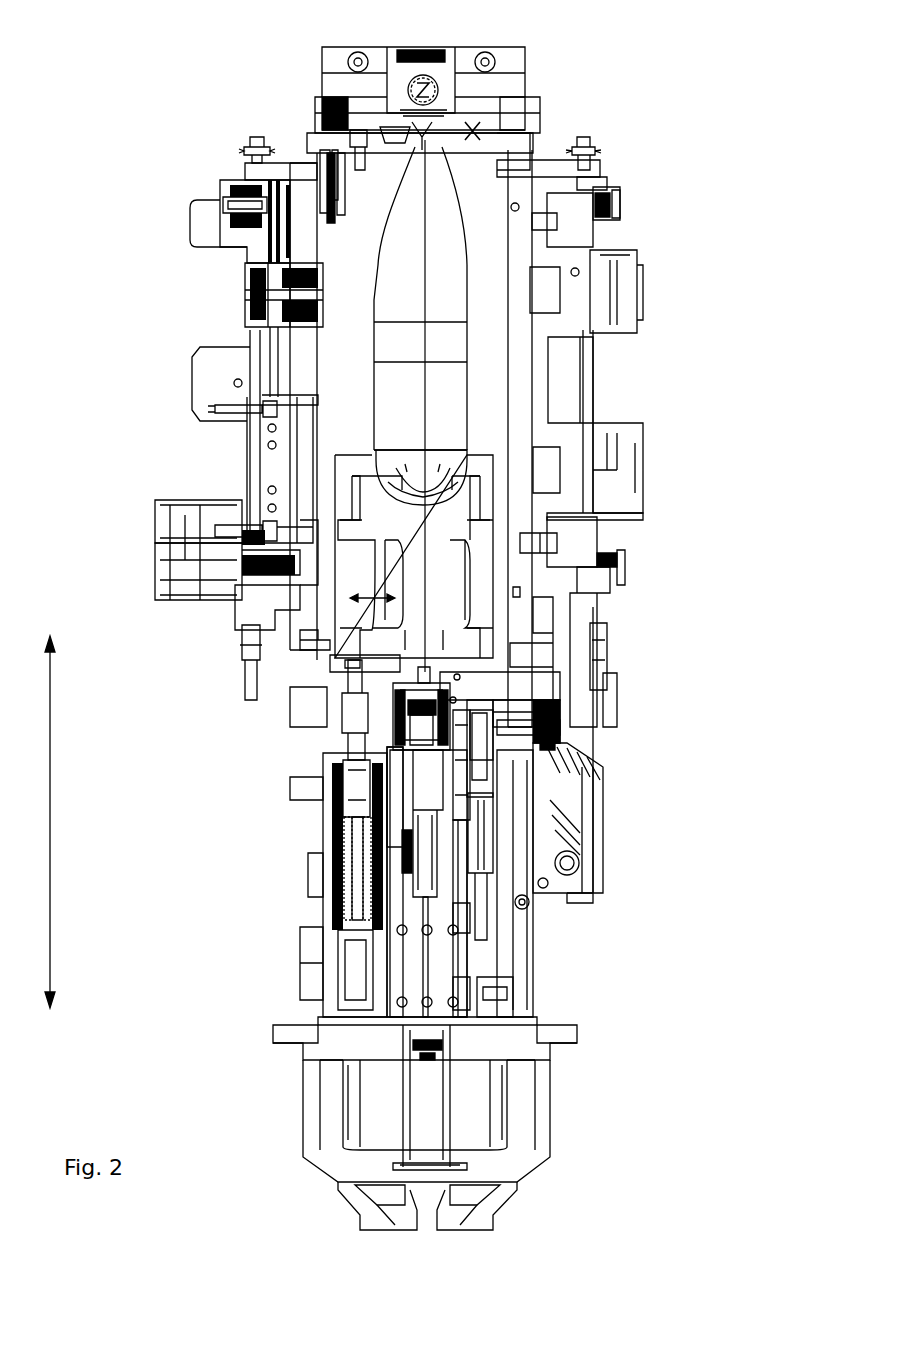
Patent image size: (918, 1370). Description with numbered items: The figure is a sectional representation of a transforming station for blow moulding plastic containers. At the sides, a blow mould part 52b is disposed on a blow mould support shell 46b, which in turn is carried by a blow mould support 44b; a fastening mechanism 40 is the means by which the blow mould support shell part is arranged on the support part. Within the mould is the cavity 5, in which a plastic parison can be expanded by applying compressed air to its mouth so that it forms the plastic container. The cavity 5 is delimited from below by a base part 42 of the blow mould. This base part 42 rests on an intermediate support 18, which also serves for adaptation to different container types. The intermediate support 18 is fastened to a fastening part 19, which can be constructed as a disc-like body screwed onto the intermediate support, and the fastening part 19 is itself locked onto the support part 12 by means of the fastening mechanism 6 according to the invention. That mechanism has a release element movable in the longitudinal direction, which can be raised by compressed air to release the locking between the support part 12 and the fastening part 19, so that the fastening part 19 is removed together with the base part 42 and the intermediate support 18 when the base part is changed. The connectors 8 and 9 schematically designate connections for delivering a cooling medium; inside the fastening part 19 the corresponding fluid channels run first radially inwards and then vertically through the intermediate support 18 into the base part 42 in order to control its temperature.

The cavity 5 is at (445, 297).
The fastening mechanism 6 is at (380, 676).
The connector 8 is at (480, 742).
The connector 9 is at (340, 790).
The support part 12 is at (480, 720).
The intermediate support 18 is at (443, 590).
The fastening part 19 is at (480, 684).
The fastening mechanism 40 is at (247, 300).
The base part 42 is at (457, 500).
The blow mould support 44b is at (242, 365).
The blow mould support shell 46b is at (300, 248).
The blow mould part 52b is at (485, 248).